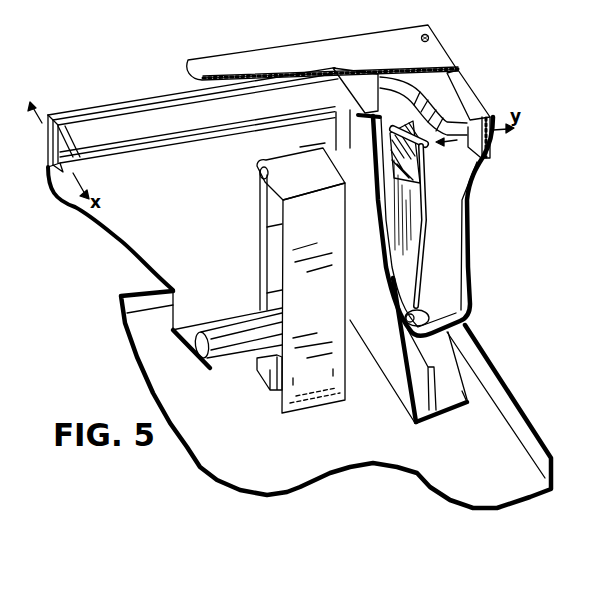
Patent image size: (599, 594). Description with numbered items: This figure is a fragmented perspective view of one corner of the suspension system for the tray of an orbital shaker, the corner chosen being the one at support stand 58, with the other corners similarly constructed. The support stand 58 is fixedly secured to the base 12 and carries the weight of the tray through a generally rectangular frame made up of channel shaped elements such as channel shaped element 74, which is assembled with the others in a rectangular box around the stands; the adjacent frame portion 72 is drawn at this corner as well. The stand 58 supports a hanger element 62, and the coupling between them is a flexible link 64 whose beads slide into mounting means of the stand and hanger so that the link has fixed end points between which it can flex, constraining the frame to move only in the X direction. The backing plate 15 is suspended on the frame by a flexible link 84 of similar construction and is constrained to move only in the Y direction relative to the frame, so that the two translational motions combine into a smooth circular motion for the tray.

The base 12 is at (503, 380).
The backing plate 15 is at (438, 48).
The support stand 58 is at (320, 398).
The hanger element 62 is at (88, 103).
The flexible link 64 is at (260, 258).
The channel section 72 is at (472, 240).
The channel shaped element 74 is at (400, 368).
The flexible link 84 is at (425, 222).